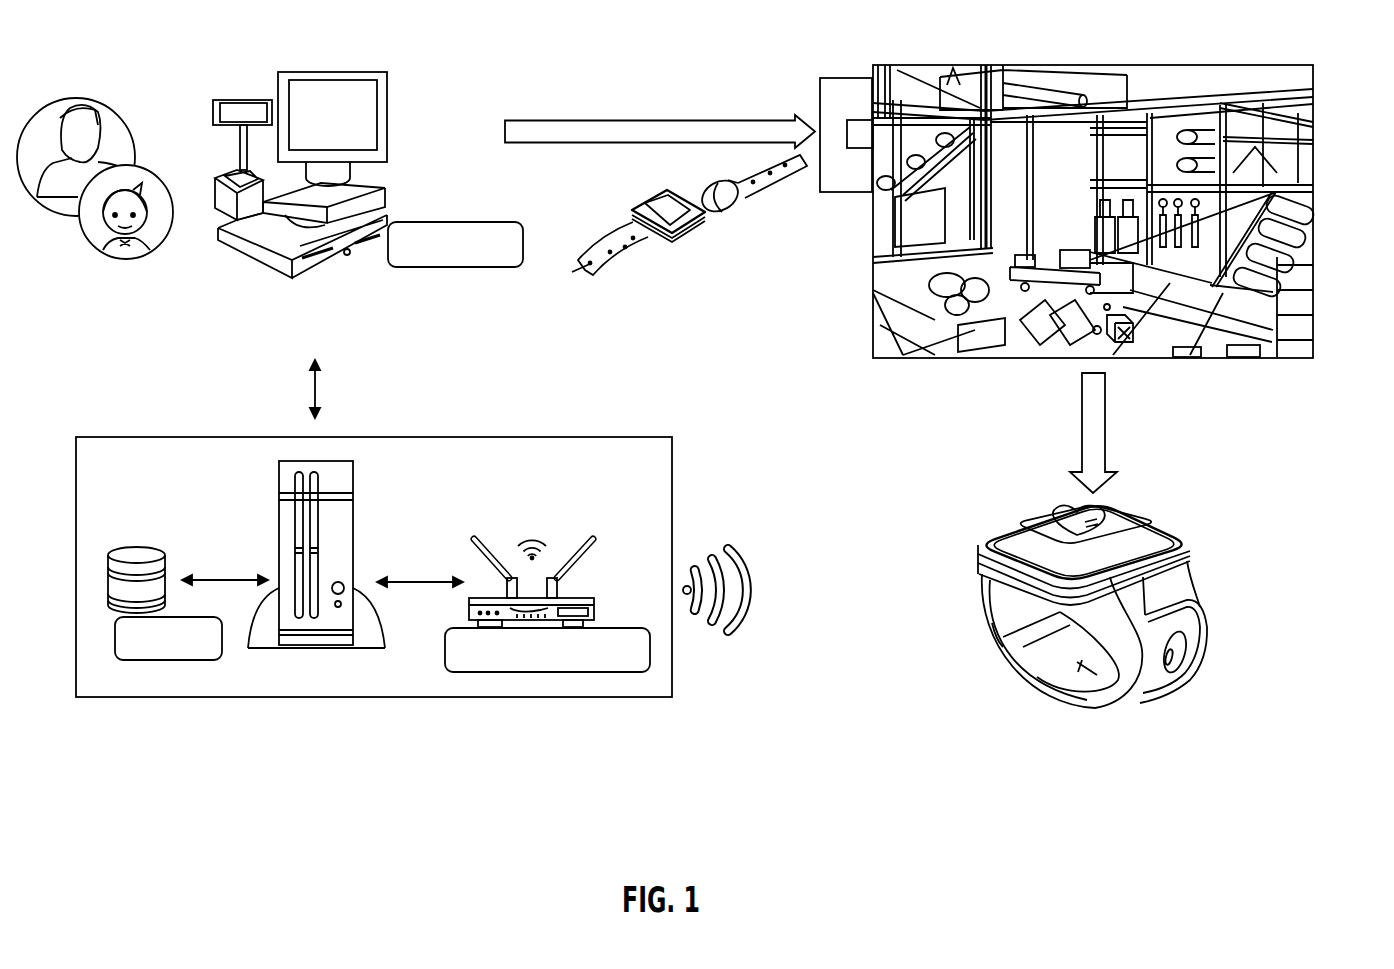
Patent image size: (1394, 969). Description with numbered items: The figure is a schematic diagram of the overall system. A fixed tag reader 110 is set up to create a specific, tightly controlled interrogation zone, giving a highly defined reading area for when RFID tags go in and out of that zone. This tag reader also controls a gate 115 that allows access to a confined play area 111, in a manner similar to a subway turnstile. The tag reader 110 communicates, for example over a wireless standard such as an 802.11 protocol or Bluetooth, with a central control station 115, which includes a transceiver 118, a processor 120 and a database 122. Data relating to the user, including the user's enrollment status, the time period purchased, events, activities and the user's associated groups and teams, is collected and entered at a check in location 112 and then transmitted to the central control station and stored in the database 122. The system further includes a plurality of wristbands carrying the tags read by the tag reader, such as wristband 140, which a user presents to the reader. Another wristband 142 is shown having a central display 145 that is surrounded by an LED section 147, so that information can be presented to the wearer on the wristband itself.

The tag reader 110 is at (847, 92).
The confined play area 111 is at (1293, 150).
The check in location 112 is at (397, 90).
The gate / central control station 115 is at (862, 137).
The transceiver 118 is at (533, 663).
The processor 120 is at (332, 632).
The database 122 is at (167, 651).
The wristband 140 is at (622, 250).
The wristband 142 is at (1124, 586).
The central display 145 is at (1123, 517).
The LED section 147 is at (975, 550).